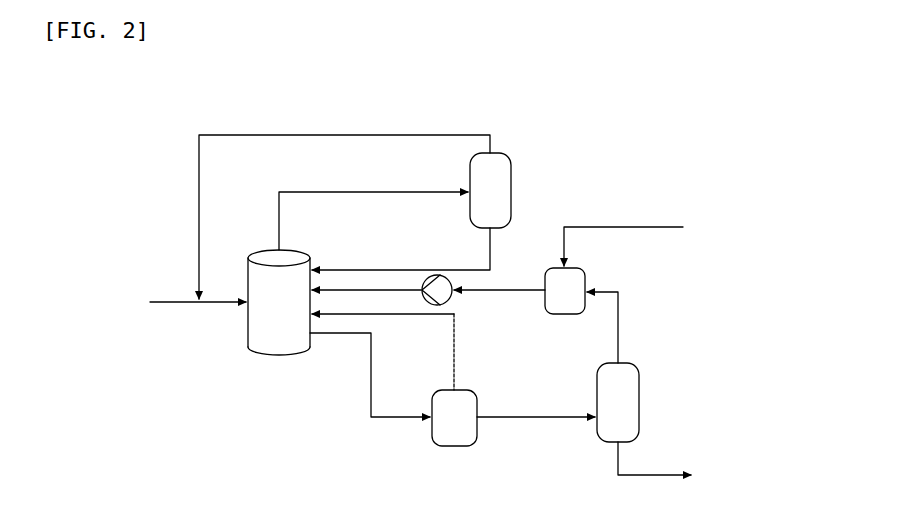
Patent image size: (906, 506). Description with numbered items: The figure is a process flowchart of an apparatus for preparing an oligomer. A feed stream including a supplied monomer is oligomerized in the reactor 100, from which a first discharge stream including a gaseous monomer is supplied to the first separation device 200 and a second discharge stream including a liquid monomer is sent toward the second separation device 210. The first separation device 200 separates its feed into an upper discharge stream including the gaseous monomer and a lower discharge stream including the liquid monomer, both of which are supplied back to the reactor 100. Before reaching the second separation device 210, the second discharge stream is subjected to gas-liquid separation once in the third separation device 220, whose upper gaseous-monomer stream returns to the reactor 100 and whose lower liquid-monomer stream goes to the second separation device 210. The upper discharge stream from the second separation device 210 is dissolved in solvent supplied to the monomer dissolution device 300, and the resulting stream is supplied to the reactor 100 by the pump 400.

The reactor 100 is at (248, 343).
The first separation device 200 is at (500, 153).
The second separation device 210 is at (638, 363).
The third separation device 220 is at (478, 428).
The monomer dissolution device 300 is at (580, 268).
The pump 400 is at (452, 299).